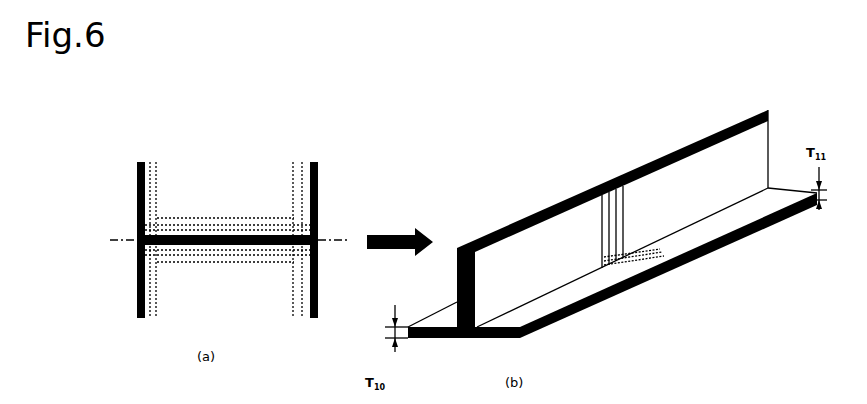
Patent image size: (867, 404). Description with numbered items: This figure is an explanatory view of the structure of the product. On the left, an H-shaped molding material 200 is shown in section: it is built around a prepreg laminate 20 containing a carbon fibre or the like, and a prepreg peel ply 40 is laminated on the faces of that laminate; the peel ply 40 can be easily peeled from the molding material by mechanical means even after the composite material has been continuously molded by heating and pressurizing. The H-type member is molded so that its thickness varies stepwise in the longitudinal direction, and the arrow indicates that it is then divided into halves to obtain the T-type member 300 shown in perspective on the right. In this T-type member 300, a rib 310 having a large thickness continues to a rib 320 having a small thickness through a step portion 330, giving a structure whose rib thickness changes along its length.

The H-shaped steel member 200 is at (362, 147).
The prepreg laminate 20 is at (318, 213).
The prepreg peel ply 40 is at (186, 218).
The T-type member 300 is at (564, 134).
The rib having a large thickness 310 is at (509, 223).
The rib having a small thickness 320 is at (734, 123).
The step portion 330 is at (615, 197).